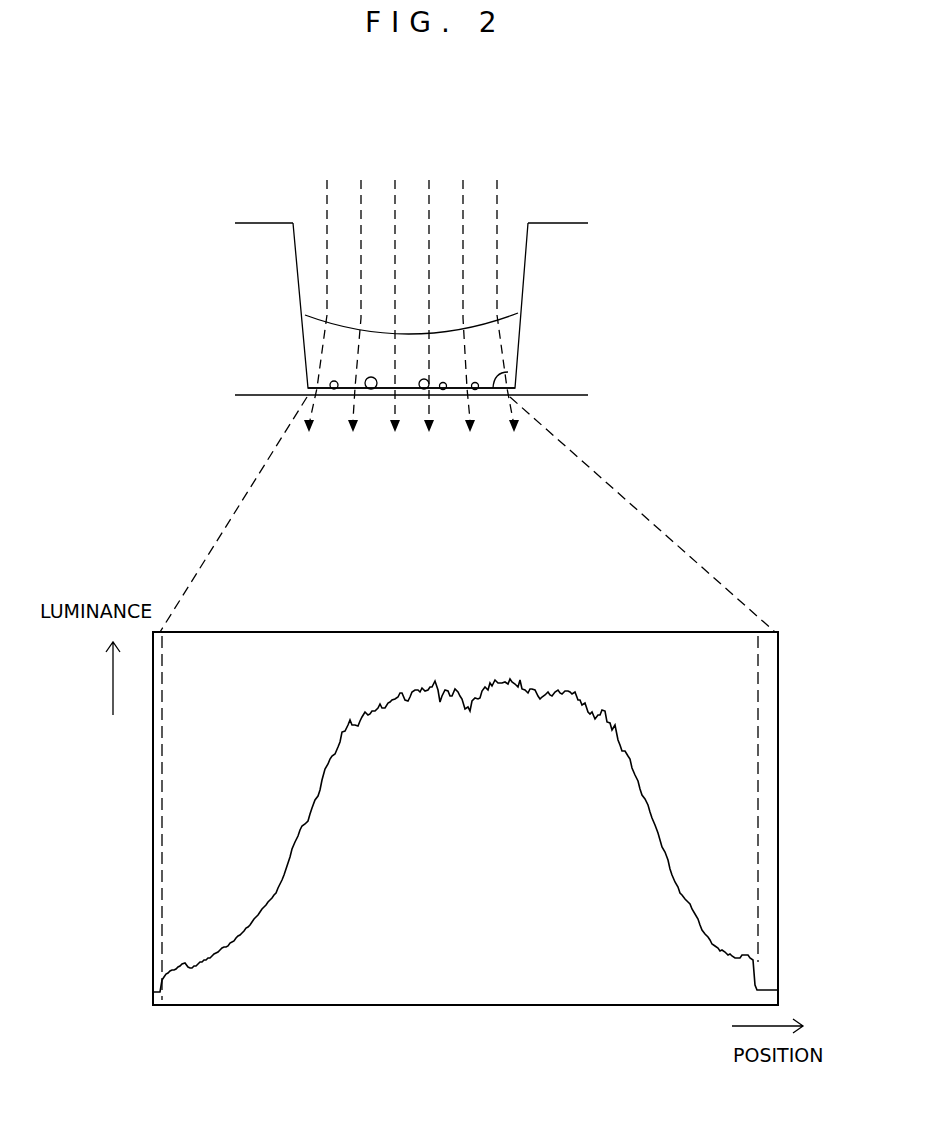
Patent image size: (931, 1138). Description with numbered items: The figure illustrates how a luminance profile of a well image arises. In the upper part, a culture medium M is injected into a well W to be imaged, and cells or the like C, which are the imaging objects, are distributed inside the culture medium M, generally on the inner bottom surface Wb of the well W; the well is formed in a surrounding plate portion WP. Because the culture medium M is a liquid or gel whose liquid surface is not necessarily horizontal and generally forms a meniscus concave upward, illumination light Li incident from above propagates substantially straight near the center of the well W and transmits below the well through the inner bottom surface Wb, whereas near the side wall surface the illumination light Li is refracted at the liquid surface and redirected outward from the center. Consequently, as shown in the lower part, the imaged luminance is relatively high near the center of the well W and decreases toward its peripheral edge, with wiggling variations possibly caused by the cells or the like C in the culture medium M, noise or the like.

The well W is at (296, 238).
The workpiece WP is at (563, 223).
The illumination light Li is at (498, 203).
The culture medium M is at (507, 340).
The inner bottom surface Wb is at (508, 372).
The cells or the like C is at (373, 392).